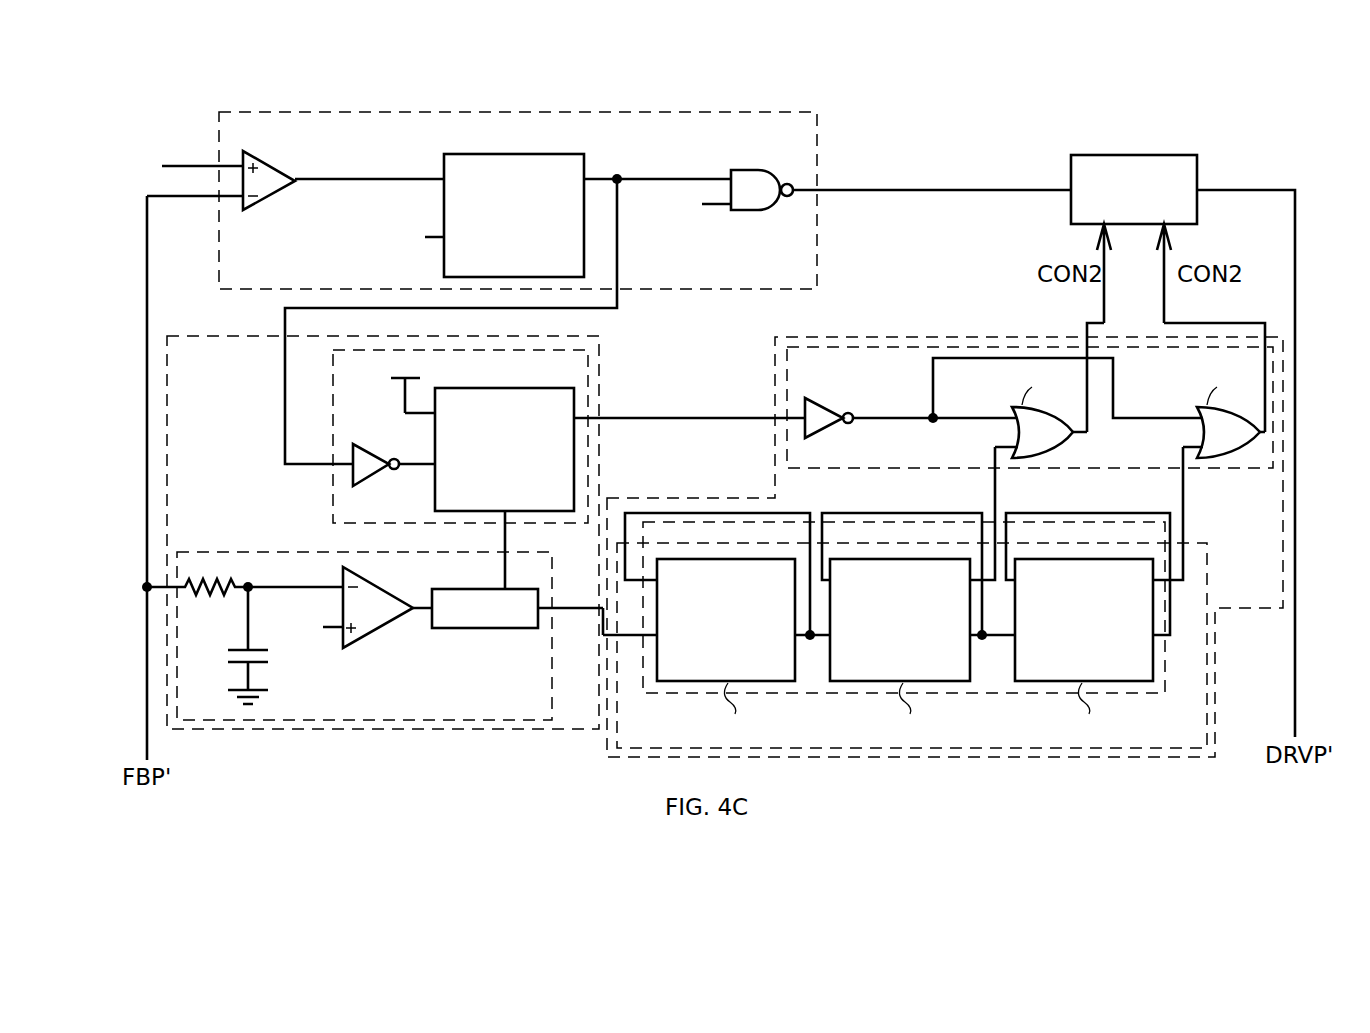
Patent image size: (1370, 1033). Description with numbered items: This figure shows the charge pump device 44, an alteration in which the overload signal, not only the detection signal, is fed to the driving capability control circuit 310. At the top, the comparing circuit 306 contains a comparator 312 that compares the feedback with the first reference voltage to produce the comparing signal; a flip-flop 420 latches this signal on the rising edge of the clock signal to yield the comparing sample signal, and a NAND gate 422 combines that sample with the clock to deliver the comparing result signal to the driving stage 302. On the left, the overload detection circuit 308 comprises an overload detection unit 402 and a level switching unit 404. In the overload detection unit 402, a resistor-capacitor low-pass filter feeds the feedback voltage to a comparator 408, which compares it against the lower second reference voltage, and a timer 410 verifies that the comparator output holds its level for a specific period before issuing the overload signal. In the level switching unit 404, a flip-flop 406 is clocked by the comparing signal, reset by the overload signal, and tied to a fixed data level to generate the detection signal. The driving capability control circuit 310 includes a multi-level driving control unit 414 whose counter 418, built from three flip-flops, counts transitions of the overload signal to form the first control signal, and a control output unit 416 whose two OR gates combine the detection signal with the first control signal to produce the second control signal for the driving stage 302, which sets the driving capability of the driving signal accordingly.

The charge pump device 44 is at (1152, 95).
The driving stage 302 is at (1173, 155).
The comparing circuit 306 is at (780, 110).
The overload detection circuit 308 is at (528, 730).
The driving capability control circuit 310 is at (900, 336).
The comparator 312 is at (268, 160).
The overload detection unit 402 is at (238, 550).
The level switching unit 404 is at (538, 526).
The flip-flop 406 is at (505, 388).
The comparator 408 is at (380, 630).
The timer 410 is at (482, 630).
The multi-level driving control unit 414 is at (1193, 543).
The control output unit 416 is at (855, 346).
The counter 418 is at (1127, 693).
The flip-flop 420 is at (538, 154).
The NAND gate 422 is at (745, 170).